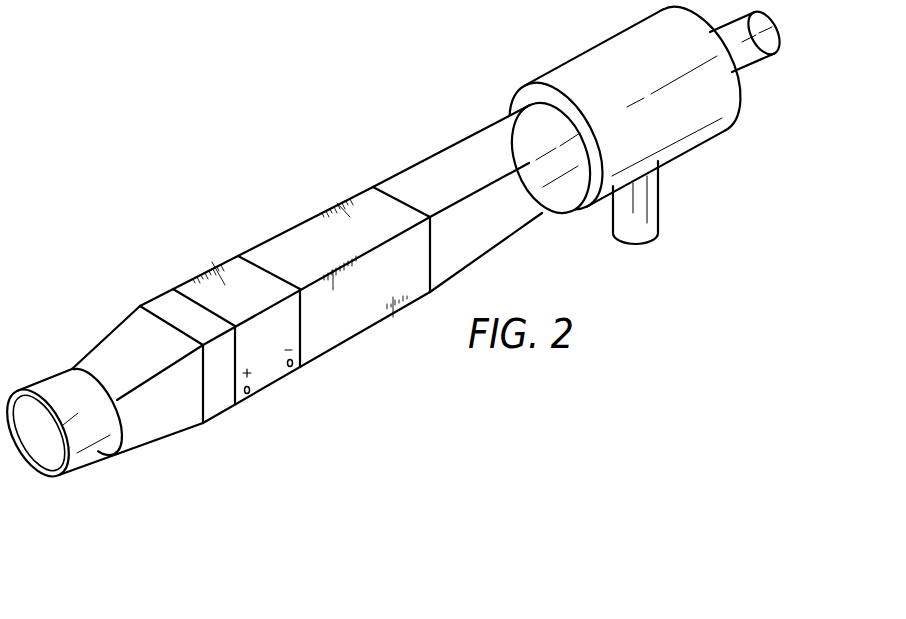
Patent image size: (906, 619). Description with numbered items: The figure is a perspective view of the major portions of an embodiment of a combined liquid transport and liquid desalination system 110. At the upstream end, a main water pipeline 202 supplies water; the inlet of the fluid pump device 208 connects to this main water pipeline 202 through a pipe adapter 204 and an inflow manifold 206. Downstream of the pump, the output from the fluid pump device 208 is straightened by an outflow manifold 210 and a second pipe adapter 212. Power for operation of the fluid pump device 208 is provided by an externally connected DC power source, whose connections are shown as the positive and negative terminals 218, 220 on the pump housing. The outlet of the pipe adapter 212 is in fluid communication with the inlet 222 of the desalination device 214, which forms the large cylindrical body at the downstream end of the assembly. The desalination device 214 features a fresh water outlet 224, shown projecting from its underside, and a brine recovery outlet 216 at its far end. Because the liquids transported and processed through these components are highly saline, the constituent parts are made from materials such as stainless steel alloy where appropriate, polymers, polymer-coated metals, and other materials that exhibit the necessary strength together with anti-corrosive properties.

The combined liquid transport and liquid desalination system 110 is at (261, 121).
The main water pipeline 202 is at (87, 453).
The pipe adapter 204 is at (113, 338).
The inflow manifold 206 is at (160, 298).
The fluid pump device 208 is at (212, 262).
The outflow manifold 210 is at (368, 318).
The pipe adapter 212 is at (465, 247).
The desalination device 214 is at (685, 142).
The brine recovery outlet 216 is at (753, 58).
The DC power source 218 is at (254, 403).
The DC power source 220 is at (297, 375).
The inlet 222 is at (515, 127).
The fresh water outlet 224 is at (637, 234).